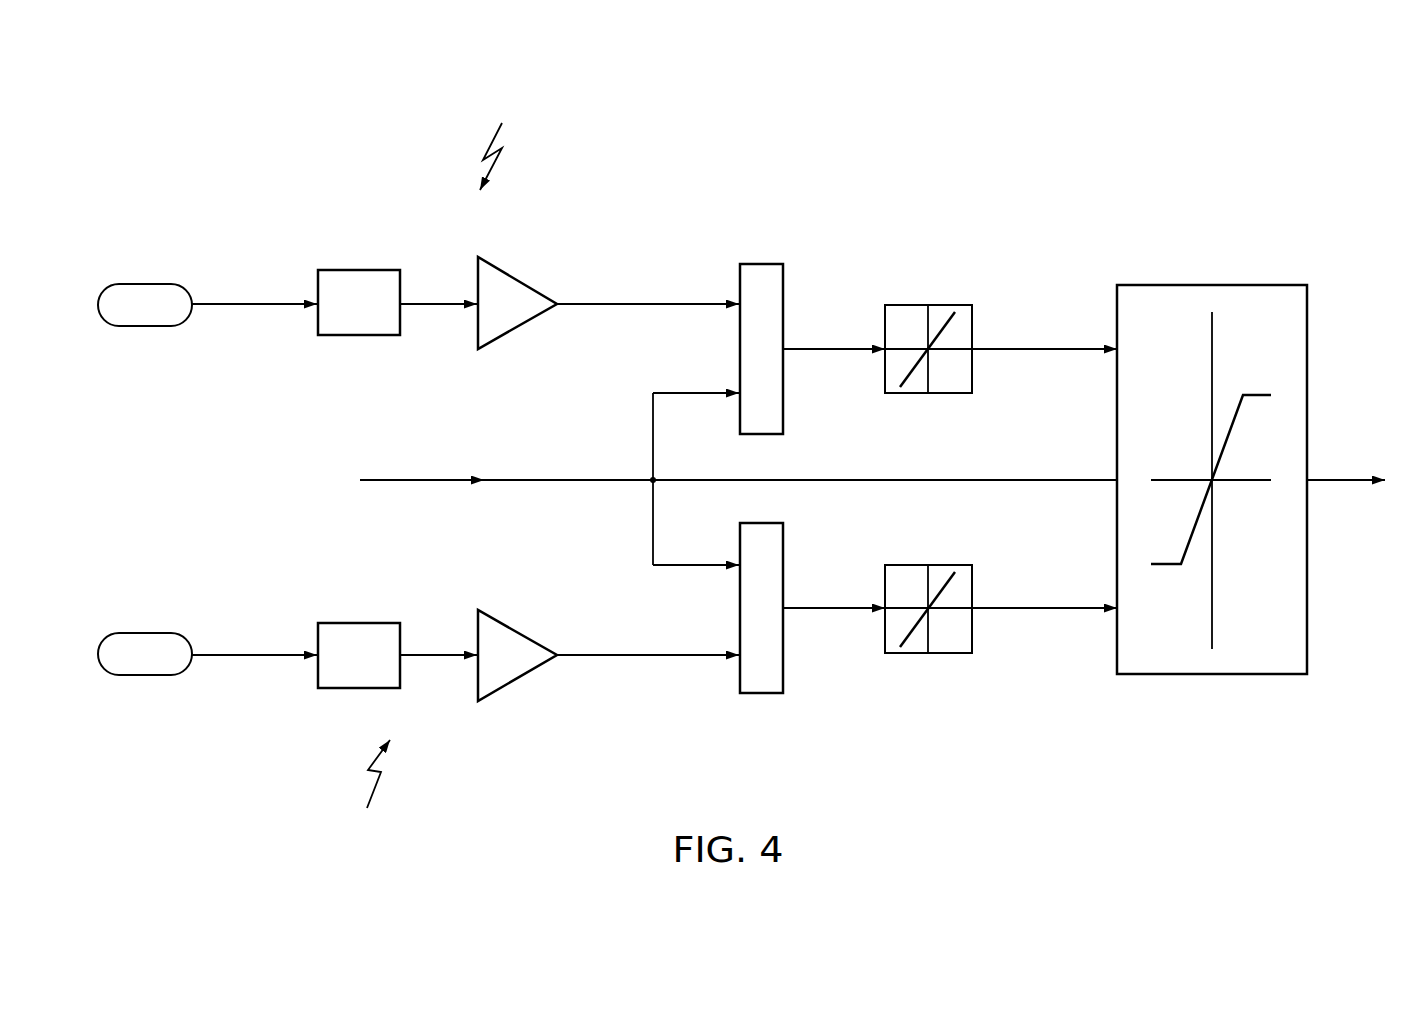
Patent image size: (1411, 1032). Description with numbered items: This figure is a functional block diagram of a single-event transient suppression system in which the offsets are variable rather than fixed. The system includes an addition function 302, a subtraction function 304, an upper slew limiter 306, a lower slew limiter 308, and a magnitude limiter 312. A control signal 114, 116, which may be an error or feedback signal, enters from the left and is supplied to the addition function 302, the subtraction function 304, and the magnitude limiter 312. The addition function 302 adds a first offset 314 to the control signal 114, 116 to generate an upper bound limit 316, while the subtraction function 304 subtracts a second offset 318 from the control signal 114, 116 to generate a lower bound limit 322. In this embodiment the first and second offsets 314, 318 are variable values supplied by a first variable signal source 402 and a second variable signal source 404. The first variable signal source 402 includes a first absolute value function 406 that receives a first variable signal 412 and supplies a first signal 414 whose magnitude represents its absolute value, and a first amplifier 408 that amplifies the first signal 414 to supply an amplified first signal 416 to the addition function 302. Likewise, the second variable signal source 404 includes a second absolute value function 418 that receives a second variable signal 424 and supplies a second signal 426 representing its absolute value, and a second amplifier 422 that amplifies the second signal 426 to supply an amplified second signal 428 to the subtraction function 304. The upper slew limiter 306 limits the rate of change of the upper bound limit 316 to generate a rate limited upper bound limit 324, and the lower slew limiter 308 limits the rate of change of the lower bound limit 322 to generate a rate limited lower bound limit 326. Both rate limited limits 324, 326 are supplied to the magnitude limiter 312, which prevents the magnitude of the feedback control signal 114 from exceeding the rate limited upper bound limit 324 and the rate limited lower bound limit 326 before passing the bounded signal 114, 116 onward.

The feedback control signal 114 is at (556, 478).
The control signal 116 is at (1338, 478).
The addition function 302 is at (763, 264).
The subtraction function 304 is at (763, 693).
The upper slew limiter 306 is at (922, 305).
The lower slew limiter 308 is at (922, 565).
The magnitude limiter 312 is at (1212, 285).
The first offset 314 is at (504, 142).
The upper bound limit 316 is at (824, 348).
The second offset 318 is at (363, 791).
The lower bound limit 322 is at (824, 608).
The rate limited upper bound limit 324 is at (1025, 348).
The rate limited lower bound limit 326 is at (1025, 608).
The first variable signal source 402 is at (150, 284).
The second variable signal source 404 is at (150, 633).
The first absolute value function 406 is at (360, 270).
The first amplifier 408 is at (515, 272).
The first variable signal 412 is at (242, 304).
The first signal 414 is at (430, 303).
The amplified first signal 416 is at (625, 303).
The second absolute value function 418 is at (360, 623).
The second amplifier 422 is at (515, 625).
The second variable signal 424 is at (242, 654).
The second signal 426 is at (428, 654).
The amplified second signal 428 is at (625, 654).